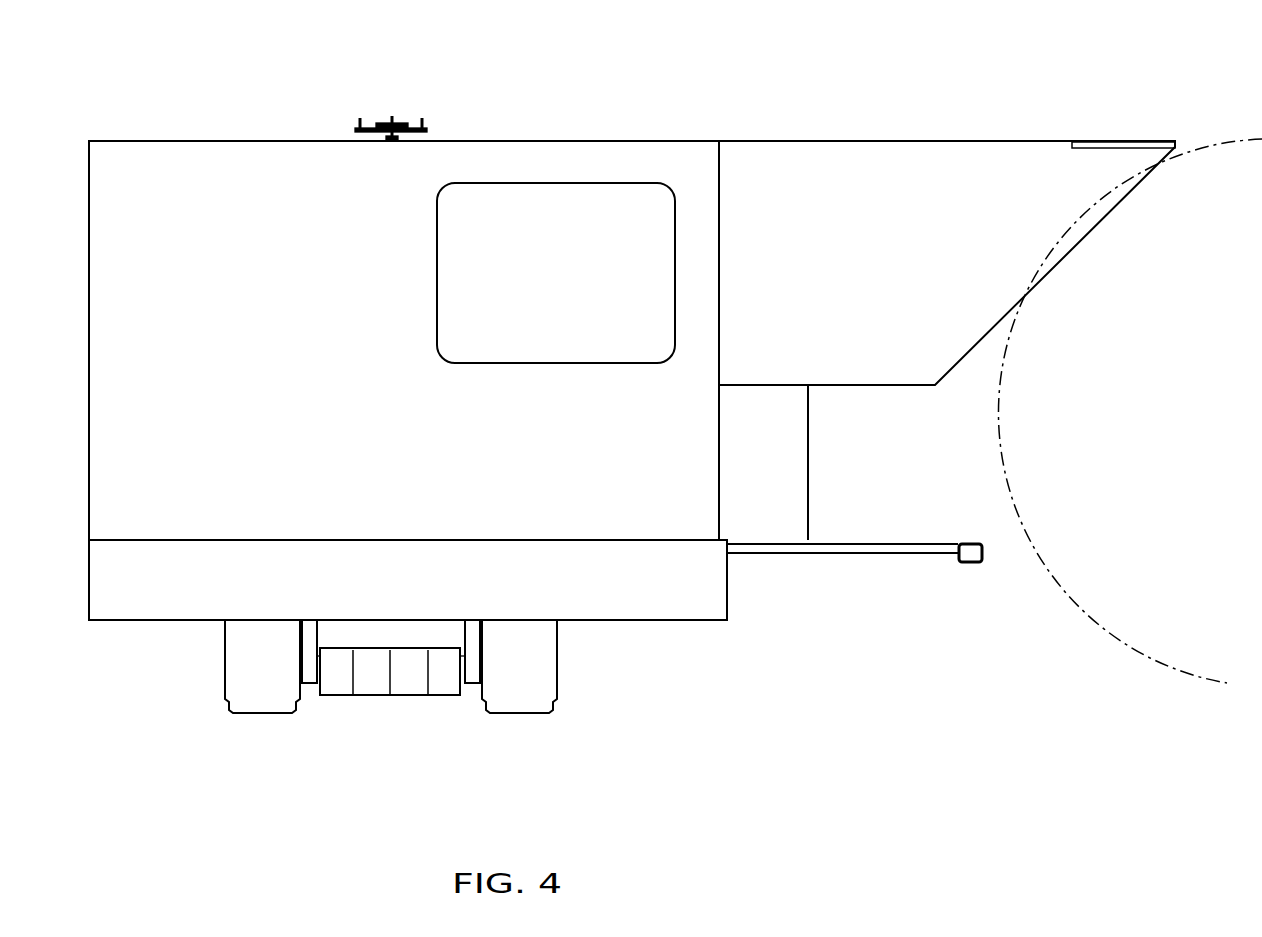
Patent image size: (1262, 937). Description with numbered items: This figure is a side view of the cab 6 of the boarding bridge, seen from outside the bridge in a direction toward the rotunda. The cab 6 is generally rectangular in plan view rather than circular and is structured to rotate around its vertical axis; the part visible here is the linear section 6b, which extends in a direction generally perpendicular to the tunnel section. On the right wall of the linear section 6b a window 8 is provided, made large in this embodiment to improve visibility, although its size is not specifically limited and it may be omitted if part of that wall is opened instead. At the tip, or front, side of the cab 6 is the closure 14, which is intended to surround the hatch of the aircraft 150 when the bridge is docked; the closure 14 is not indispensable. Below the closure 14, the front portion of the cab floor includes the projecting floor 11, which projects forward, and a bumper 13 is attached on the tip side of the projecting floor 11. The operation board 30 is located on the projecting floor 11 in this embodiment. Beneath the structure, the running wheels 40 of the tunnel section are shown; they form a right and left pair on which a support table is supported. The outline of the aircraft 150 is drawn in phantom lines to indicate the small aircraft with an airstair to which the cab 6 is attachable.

The cab 6 is at (188, 104).
The linear section 6b is at (478, 141).
The window 8 is at (561, 353).
The closure 14 is at (860, 141).
The operation board 30 is at (798, 472).
The projecting floor 11 is at (868, 527).
The bumper 13 is at (972, 542).
The running wheels 40 is at (225, 667).
The aircraft 150 is at (1213, 143).